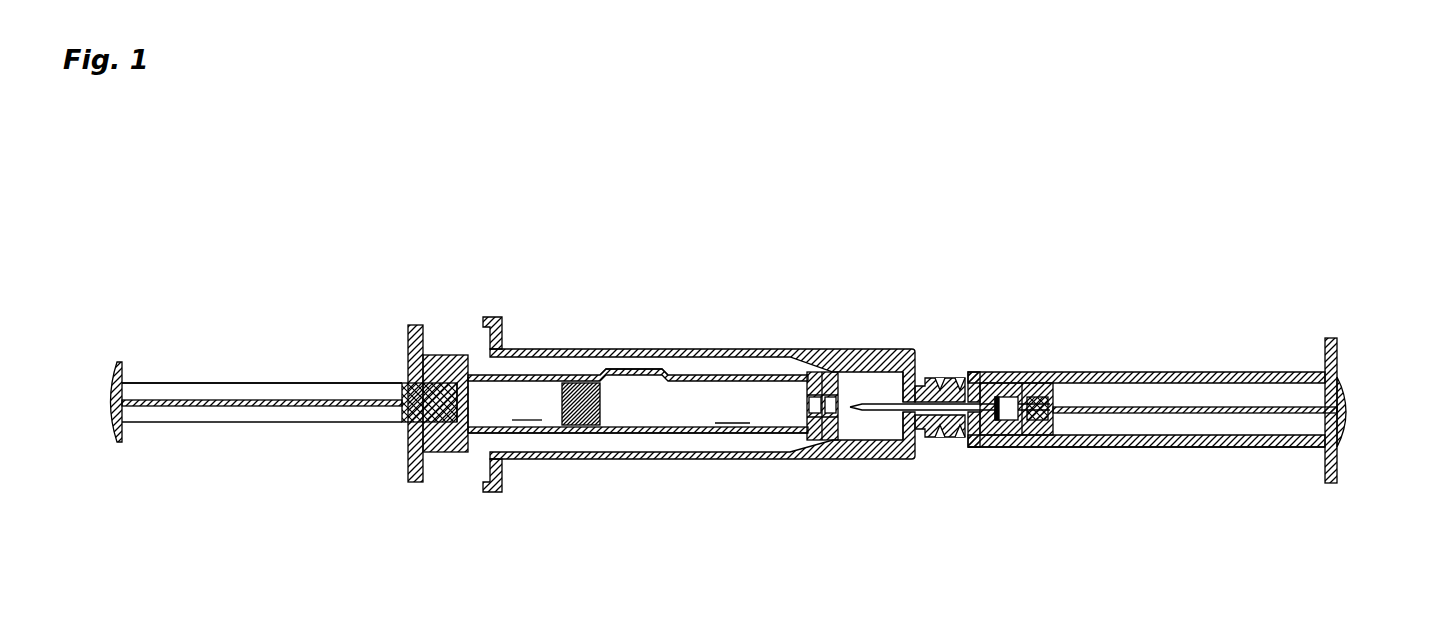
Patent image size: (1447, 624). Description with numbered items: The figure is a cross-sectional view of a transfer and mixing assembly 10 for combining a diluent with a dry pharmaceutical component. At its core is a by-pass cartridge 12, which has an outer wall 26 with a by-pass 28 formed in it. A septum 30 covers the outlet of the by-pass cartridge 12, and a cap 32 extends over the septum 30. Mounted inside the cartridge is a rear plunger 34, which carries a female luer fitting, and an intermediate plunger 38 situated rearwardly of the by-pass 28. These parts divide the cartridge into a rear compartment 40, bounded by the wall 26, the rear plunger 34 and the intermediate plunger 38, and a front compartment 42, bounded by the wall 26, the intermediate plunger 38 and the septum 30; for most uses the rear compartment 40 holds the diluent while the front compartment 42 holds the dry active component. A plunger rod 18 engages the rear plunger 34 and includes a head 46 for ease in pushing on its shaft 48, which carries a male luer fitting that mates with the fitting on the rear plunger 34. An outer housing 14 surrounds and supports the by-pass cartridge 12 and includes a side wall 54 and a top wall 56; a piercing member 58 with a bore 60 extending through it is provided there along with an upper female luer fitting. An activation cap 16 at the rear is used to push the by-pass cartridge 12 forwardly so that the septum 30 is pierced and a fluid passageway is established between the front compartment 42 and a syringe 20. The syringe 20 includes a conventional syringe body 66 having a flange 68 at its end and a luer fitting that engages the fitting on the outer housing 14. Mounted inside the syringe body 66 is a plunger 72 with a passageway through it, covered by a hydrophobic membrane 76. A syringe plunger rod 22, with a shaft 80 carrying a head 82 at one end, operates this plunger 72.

The transfer and mixing assembly 10 is at (451, 146).
The by-pass cartridge 12 is at (742, 362).
The outer housing 14 is at (620, 326).
The activation cap 16 is at (393, 488).
The plunger rod 18 is at (286, 356).
The syringe 20 is at (1138, 346).
The syringe plunger rod 22 is at (1233, 392).
The outer wall 26 is at (717, 432).
The by-pass 28 is at (657, 395).
The septum 30 is at (810, 441).
The cap 32 is at (840, 421).
The rear plunger 34 is at (470, 415).
The intermediate plunger 38 is at (559, 399).
The rear compartment 40 is at (526, 405).
The front compartment 42 is at (732, 408).
The head 46 is at (113, 366).
The shaft 48 is at (181, 403).
The side wall 54 is at (660, 350).
The top wall 56 is at (920, 440).
The piercing member 58 is at (887, 404).
The bore 60 is at (891, 460).
The syringe body 66 is at (1120, 446).
The flange 68 is at (1338, 345).
The plunger 72 is at (1019, 384).
The hydrophobic membrane 76 is at (982, 388).
The shaft 80 is at (1190, 414).
The head 82 is at (1351, 406).